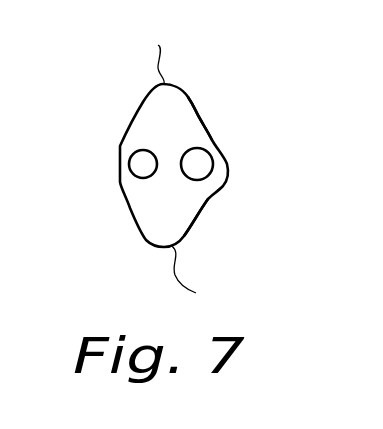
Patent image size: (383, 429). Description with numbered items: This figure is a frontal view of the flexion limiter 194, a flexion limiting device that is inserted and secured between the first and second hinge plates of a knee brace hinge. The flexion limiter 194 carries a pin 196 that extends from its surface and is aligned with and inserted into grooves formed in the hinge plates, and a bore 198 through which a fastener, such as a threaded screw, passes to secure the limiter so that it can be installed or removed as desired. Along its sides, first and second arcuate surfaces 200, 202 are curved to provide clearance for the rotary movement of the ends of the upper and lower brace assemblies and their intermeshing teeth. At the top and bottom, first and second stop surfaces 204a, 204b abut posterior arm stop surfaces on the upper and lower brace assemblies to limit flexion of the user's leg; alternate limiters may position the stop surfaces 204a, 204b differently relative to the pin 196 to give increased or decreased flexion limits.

The flexion limiter 194 is at (228, 164).
The pin 196 is at (134, 162).
The bore 198 is at (202, 158).
The first arcuate surface 200 is at (199, 117).
The second arcuate surface 202 is at (205, 204).
The first stop surface 204a is at (126, 57).
The second stop surface 204b is at (215, 276).